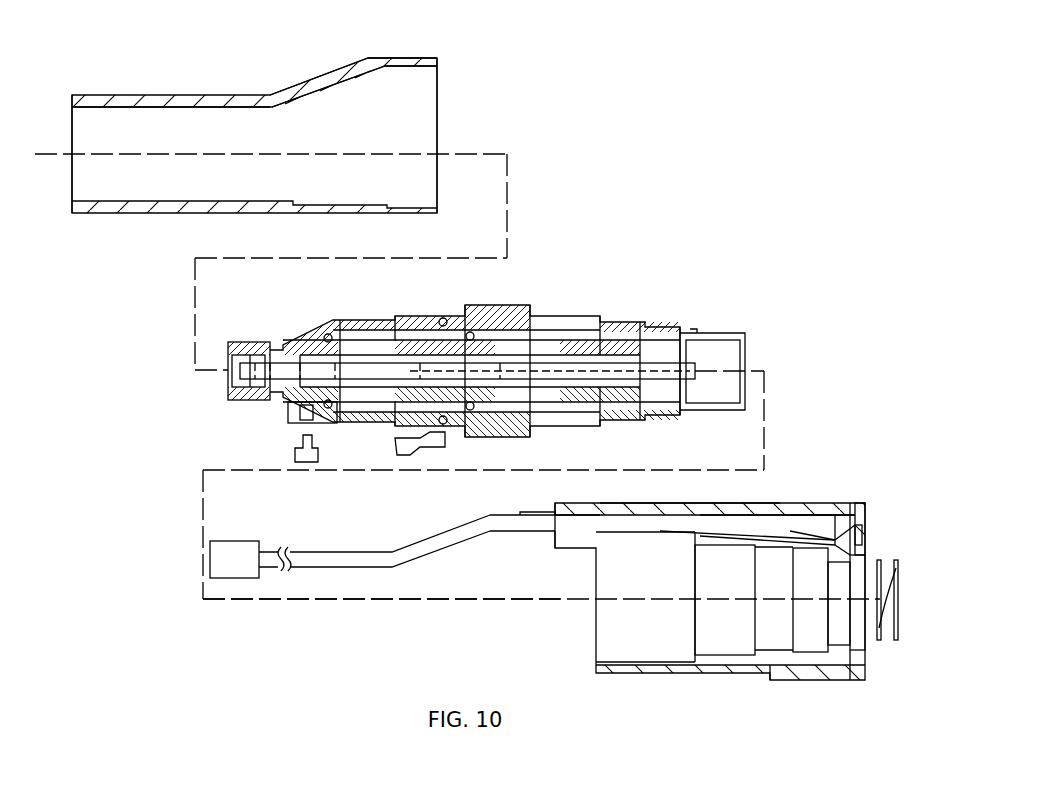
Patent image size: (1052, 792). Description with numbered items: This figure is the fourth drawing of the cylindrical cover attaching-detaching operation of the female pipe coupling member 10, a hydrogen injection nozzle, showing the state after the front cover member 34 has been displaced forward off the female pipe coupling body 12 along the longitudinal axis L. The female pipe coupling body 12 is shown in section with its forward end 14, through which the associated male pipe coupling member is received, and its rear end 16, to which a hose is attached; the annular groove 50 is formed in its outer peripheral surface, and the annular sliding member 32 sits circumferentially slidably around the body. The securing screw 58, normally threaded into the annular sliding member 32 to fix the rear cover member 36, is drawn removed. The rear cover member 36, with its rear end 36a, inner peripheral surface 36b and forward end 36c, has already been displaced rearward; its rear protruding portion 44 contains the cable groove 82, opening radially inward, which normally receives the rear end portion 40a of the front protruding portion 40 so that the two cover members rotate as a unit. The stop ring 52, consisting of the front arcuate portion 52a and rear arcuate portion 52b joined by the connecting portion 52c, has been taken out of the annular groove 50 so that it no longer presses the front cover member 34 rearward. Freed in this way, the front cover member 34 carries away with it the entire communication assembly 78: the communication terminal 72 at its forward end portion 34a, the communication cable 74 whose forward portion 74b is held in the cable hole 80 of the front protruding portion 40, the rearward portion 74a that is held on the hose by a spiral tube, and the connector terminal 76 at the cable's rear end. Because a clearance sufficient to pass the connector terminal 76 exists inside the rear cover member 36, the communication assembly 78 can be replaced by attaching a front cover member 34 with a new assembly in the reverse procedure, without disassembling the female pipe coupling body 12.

The female pipe coupling member 10 is at (660, 95).
The female pipe coupling body 12 is at (572, 300).
The forward end 14 is at (745, 360).
The rear end 16 is at (228, 383).
The annular sliding member 32 is at (292, 417).
The front cover member 34 is at (765, 505).
The forward end portion 34a is at (857, 520).
The rear cover member 36 is at (240, 94).
The rear end 36a is at (72, 100).
The inner peripheral surface 36b is at (158, 112).
The forward end 36c is at (437, 66).
The front protruding portion 40 is at (685, 507).
The rear end portion 40a is at (542, 514).
The rear protruding portion 44 is at (340, 72).
The annular groove 50 is at (742, 332).
The stop ring 52 is at (898, 560).
The front arcuate portion 52a is at (900, 593).
The rear arcuate portion 52b is at (897, 605).
The connecting portion 52c is at (883, 629).
The securing screw 58 is at (296, 455).
The communication terminal 72 is at (852, 527).
The communication cable 74 is at (803, 533).
The rearward portion 74a is at (302, 560).
The forward portion 74b is at (740, 525).
The connector terminal 76 is at (223, 555).
The communication assembly 78 is at (652, 527).
The cable hole 80 is at (728, 532).
The cable groove 82 is at (410, 80).
The longitudinal axis L is at (256, 600).